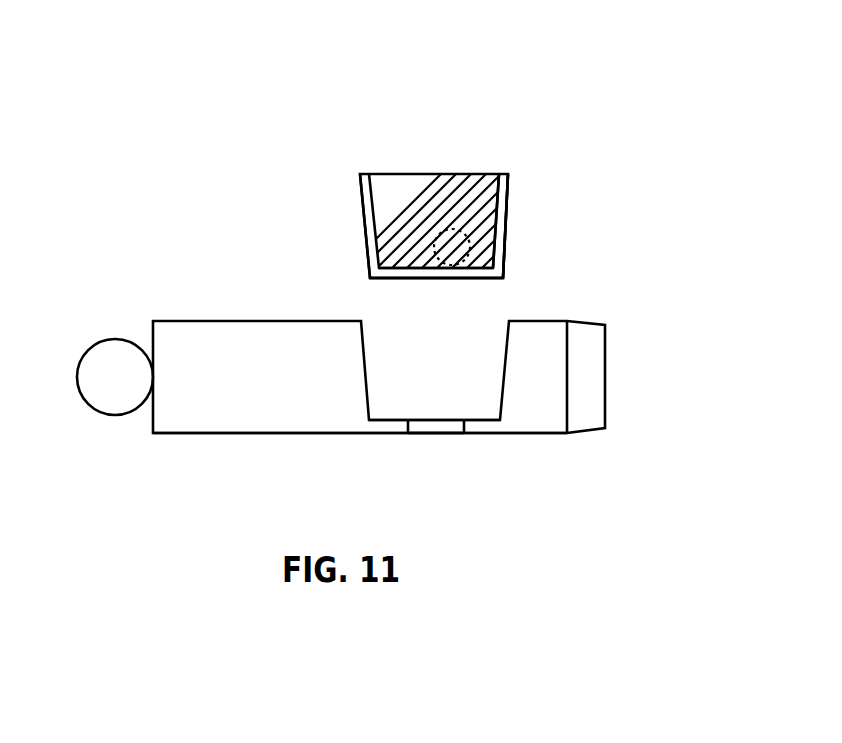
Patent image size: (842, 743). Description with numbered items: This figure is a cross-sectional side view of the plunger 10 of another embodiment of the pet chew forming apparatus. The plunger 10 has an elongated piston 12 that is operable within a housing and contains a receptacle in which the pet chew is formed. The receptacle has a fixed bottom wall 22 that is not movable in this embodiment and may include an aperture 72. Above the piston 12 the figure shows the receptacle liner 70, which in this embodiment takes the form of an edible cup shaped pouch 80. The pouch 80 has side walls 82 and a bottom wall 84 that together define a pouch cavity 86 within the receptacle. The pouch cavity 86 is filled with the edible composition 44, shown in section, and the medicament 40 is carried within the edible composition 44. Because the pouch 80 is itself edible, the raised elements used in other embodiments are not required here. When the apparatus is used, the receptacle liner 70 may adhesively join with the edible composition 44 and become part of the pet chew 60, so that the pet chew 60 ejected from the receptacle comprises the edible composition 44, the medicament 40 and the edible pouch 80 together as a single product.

The plunger 10 is at (267, 283).
The elongated piston 12 is at (226, 435).
The fixed bottom wall 22 is at (482, 425).
The aperture 72 is at (437, 425).
The pet chew 60 is at (393, 137).
The edible cup shaped pouch 80 is at (512, 173).
The side walls 82 is at (502, 220).
The bottom wall 84 is at (480, 275).
The edible composition 44 is at (393, 184).
The pouch cavity 86 is at (389, 229).
The medicament 40 is at (453, 229).
The receptacle liner 70 is at (614, 184).